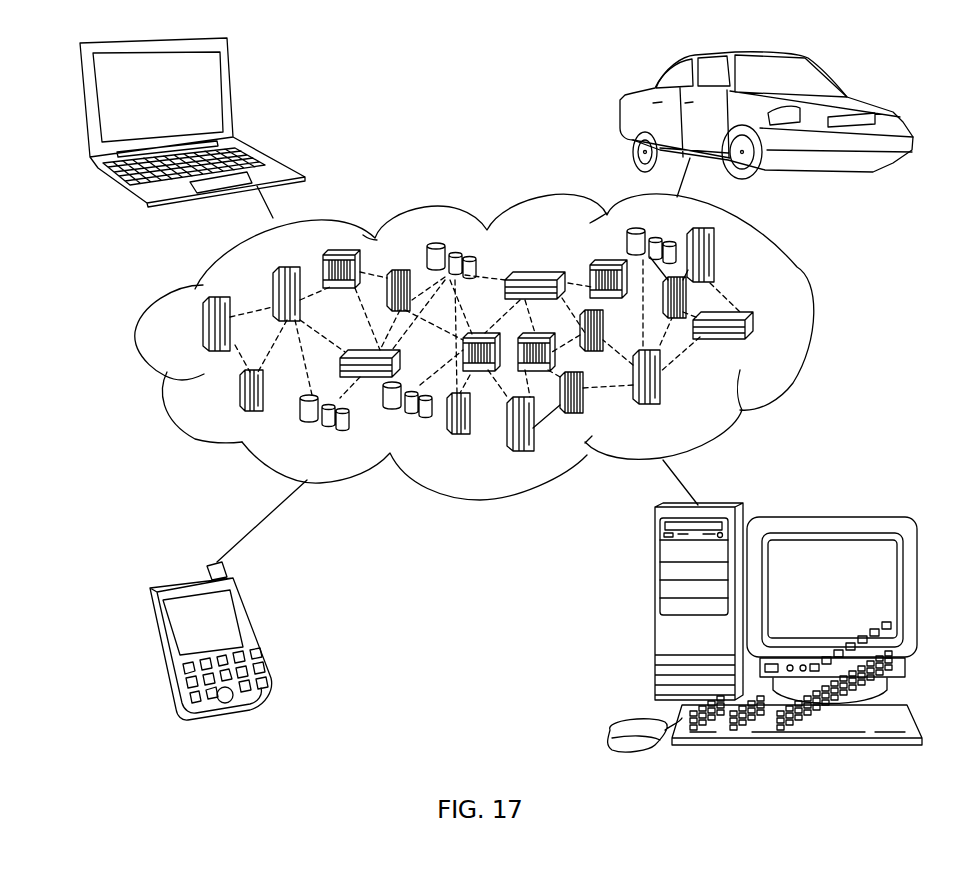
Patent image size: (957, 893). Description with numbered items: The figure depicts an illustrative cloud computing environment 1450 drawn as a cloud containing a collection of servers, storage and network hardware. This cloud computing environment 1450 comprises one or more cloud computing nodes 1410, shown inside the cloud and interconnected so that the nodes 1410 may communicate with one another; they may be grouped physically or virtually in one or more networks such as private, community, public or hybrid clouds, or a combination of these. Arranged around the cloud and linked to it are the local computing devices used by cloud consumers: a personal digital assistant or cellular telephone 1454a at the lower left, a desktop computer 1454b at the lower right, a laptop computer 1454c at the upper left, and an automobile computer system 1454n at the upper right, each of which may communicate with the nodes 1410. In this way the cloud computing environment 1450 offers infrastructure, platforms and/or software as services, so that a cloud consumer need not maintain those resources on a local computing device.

The cloud computing nodes 1410 is at (770, 343).
The cloud computing environment 1450 is at (772, 323).
The personal digital assistant or cellular telephone 1454a is at (253, 622).
The desktop computer 1454b is at (653, 616).
The laptop computer 1454c is at (232, 88).
The automobile computer system 1454n is at (625, 98).